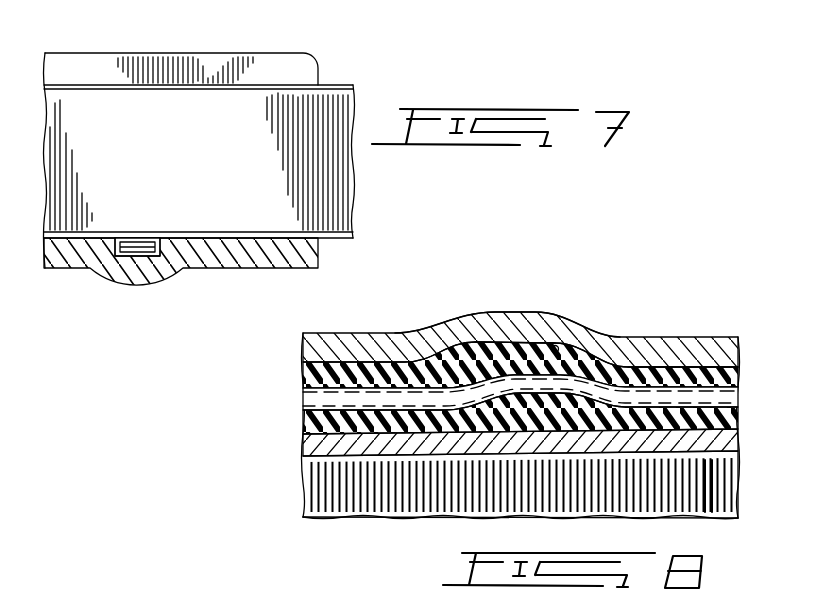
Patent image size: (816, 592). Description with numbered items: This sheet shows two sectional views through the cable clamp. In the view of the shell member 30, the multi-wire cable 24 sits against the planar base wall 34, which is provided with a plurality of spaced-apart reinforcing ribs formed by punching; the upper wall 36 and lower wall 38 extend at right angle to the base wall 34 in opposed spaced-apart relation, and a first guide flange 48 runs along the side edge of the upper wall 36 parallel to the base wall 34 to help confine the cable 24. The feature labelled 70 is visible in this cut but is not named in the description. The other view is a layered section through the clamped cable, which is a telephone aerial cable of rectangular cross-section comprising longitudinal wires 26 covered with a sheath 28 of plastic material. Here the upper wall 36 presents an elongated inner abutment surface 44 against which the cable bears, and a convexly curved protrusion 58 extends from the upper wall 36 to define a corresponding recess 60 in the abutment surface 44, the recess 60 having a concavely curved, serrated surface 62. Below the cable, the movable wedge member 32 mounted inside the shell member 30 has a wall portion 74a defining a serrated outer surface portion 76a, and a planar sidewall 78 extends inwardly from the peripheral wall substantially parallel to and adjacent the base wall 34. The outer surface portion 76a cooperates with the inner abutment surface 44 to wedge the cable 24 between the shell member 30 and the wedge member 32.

In FIG. 7, the multi-wire cable 24 is at (203, 165).
In FIG. 8, the multi-wire cable 24 is at (302, 376).
In FIG. 8, the wires 26 is at (300, 400).
In FIG. 8, the sheath 28 is at (485, 355).
In FIG. 8, the shell member 30 is at (353, 333).
In FIG. 8, the wedge member 32 is at (302, 493).
In FIG. 7, the base wall 34 is at (217, 259).
In FIG. 8, the upper wall 36 is at (388, 343).
In FIG. 7, the lower wall 38 is at (305, 68).
In FIG. 8, the inner abutment surface 44 is at (687, 370).
In FIG. 8, the first guide flange 48 is at (256, 591).
In FIG. 8, the convexly curved protrusion 58 is at (537, 313).
In FIG. 8, the recess 60 is at (507, 347).
In FIG. 8, the serrated surface 62 is at (562, 347).
In FIG. 7, the recess 70 is at (140, 268).
In FIG. 8, the wall portion 74a is at (300, 444).
In FIG. 8, the outer surface portion 76a is at (740, 418).
In FIG. 8, the planar sidewall 78 is at (707, 497).